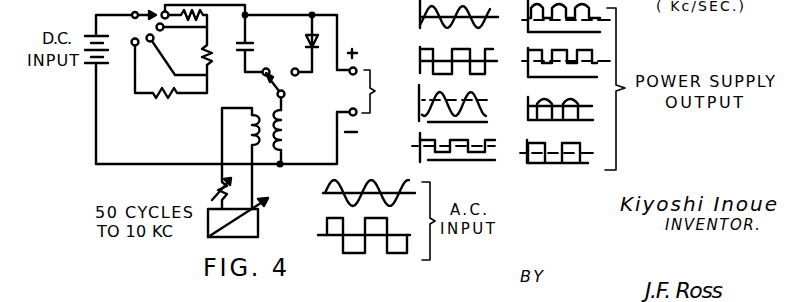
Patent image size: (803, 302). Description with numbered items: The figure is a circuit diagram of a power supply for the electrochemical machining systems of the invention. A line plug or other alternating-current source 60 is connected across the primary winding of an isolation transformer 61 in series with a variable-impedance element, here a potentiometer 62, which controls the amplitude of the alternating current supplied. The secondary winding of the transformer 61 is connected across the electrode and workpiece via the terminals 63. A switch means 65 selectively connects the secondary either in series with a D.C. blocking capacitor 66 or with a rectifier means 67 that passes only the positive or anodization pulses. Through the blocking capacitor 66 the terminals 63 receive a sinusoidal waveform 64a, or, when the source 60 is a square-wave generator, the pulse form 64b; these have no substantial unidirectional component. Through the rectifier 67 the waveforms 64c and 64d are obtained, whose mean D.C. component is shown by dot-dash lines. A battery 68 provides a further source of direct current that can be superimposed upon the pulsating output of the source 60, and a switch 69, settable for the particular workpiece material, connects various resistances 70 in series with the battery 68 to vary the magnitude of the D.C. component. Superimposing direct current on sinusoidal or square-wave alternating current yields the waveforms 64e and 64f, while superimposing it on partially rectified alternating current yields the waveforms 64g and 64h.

The alternating-current source 60 is at (258, 222).
The isolation transformer 61 is at (259, 114).
The potentiometer 62 is at (216, 183).
The terminals 63 is at (367, 90).
The sinusoidal waveform 64a is at (419, 10).
The square-wave pulse form 64b is at (419, 52).
The rectified sinusoidal waveform 64c is at (541, 100).
The rectified square waveform 64d is at (536, 164).
The D.C.-superimposed sinusoidal waveform 64e is at (421, 114).
The D.C.-superimposed square waveform 64f is at (419, 151).
The D.C.-superimposed partially rectified sinusoidal waveform 64g is at (597, 24).
The D.C.-superimposed partially rectified square waveform 64h is at (597, 68).
The switch means 65 is at (278, 86).
The D.C. blocking capacitor 66 is at (243, 52).
The rectifier means 67 is at (309, 41).
The battery 68 is at (95, 66).
The switch 69 is at (149, 13).
The resistances 70 is at (174, 93).